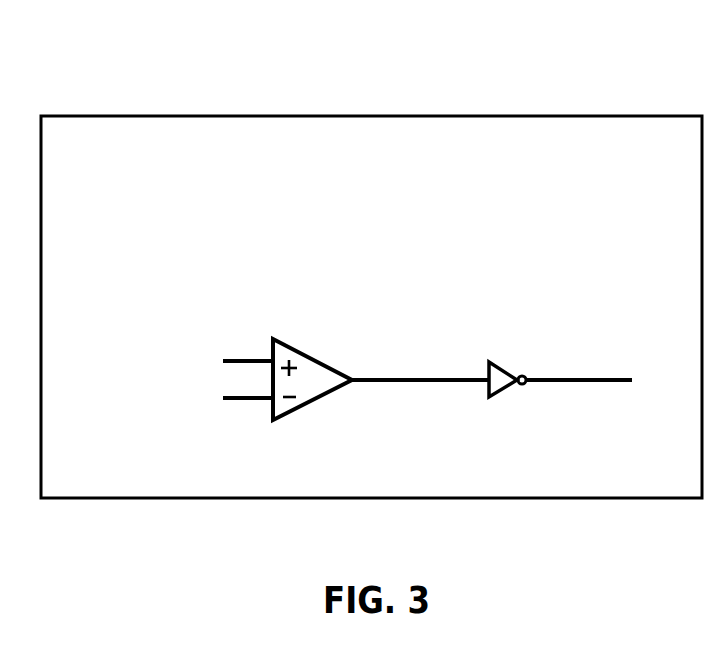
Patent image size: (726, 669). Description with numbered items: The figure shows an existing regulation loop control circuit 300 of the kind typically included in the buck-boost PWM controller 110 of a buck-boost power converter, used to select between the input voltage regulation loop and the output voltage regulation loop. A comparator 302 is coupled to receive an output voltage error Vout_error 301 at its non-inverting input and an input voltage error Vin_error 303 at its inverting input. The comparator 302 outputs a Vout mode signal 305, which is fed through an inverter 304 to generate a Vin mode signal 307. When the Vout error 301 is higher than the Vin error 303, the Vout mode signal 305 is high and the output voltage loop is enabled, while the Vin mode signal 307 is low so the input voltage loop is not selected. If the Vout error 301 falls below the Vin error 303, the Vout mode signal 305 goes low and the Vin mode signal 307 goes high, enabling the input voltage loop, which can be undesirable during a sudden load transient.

The regulation loop control circuit 300 is at (398, 44).
The buck-boost PWM controller 110 is at (468, 160).
The output voltage error Vout_error 301 is at (244, 350).
The comparator 302 is at (310, 345).
The Vin_error 303 is at (253, 412).
The inverter 304 is at (503, 367).
The Vout mode signal 305 is at (410, 348).
The Vin mode signal 307 is at (587, 342).